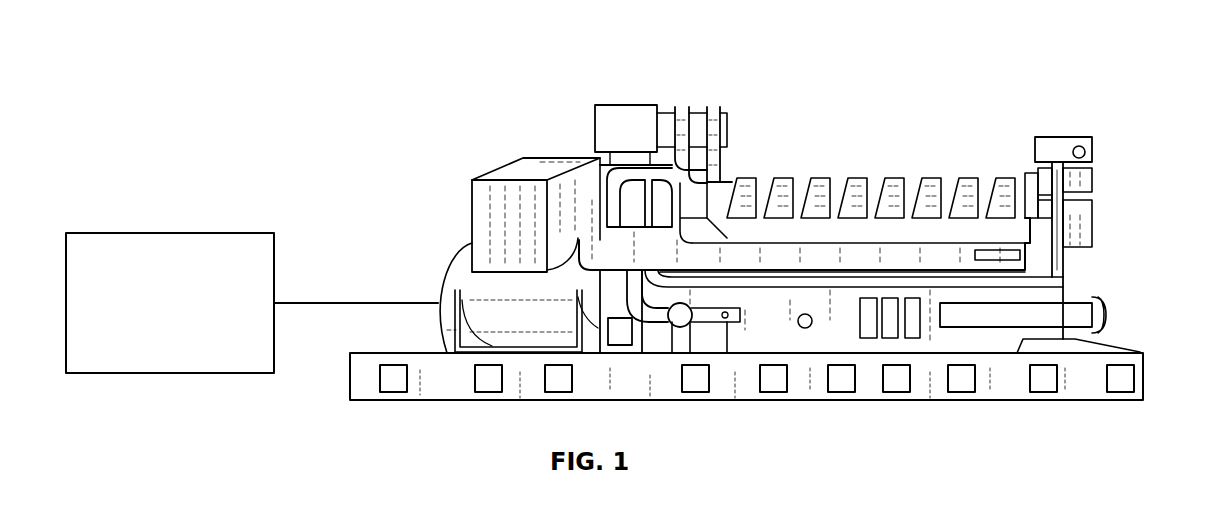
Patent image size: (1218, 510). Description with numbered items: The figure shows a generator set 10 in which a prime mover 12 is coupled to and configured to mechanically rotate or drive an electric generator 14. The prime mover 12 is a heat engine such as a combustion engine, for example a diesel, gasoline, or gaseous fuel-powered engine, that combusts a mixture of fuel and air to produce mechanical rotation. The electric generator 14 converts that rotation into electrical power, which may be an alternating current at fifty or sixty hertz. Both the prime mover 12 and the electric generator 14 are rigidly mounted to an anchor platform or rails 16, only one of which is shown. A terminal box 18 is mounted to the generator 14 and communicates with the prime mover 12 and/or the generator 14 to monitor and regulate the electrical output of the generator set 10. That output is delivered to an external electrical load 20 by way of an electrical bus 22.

The generator set 10 is at (375, 409).
The prime mover 12 is at (1092, 84).
The electric generator 14 is at (449, 258).
The anchor platform or rails 16 is at (1140, 370).
The terminal box 18 is at (498, 165).
The external electrical load 20 is at (222, 232).
The electrical bus 22 is at (320, 303).